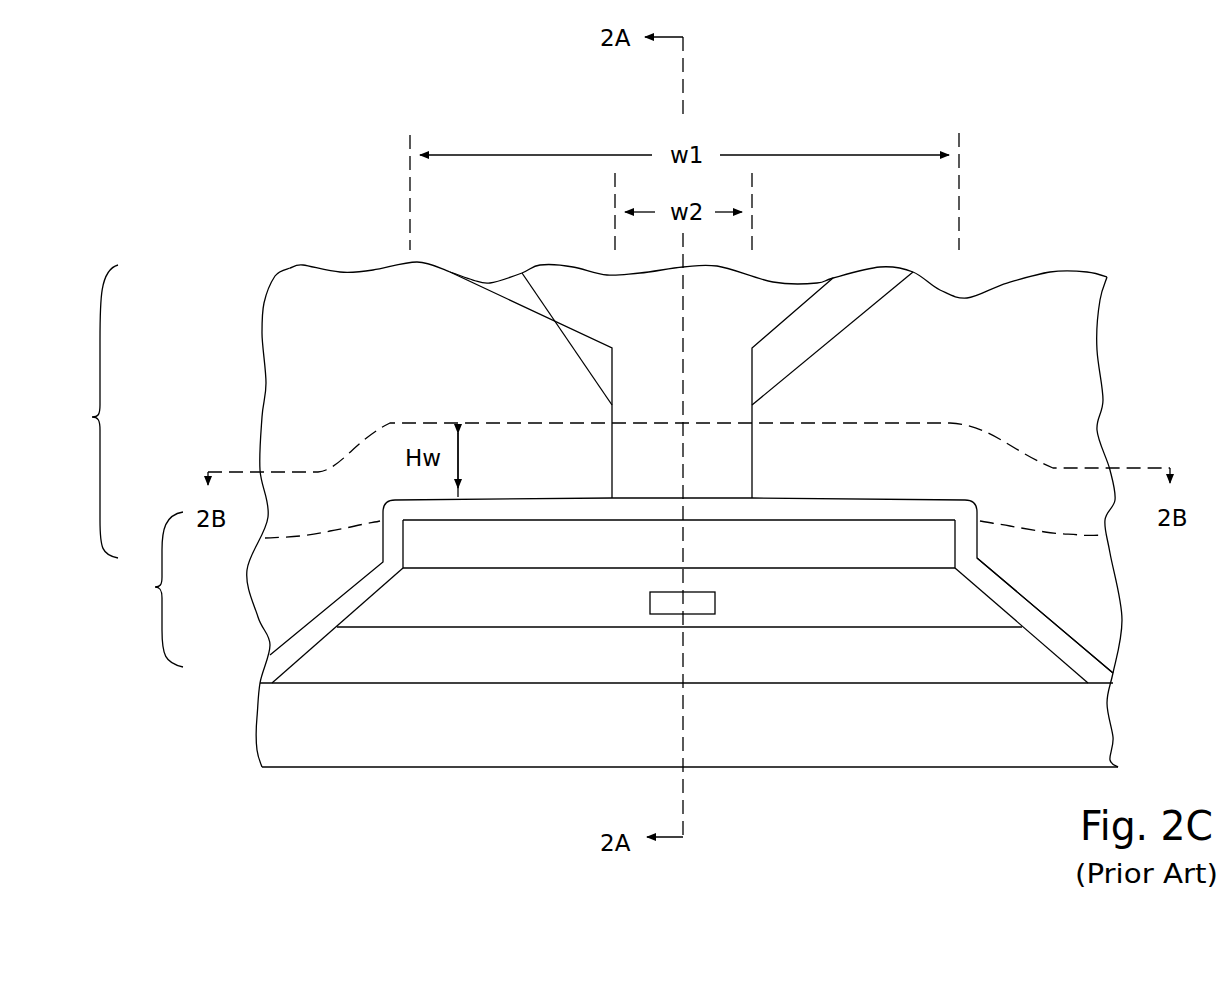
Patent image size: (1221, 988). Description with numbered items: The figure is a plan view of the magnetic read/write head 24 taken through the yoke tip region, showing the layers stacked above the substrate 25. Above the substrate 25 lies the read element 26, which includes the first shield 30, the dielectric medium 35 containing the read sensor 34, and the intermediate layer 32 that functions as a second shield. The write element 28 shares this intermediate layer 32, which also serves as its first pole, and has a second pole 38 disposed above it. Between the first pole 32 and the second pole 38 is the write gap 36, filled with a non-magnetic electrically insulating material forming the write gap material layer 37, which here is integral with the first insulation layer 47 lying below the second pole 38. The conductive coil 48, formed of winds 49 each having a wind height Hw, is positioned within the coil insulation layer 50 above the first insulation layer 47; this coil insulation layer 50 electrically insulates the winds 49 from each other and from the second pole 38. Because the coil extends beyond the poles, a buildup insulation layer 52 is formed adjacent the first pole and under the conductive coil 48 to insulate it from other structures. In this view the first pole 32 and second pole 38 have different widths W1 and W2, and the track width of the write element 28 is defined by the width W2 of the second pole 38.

The magnetic read/write head 24 is at (1010, 166).
The substrate 25 is at (690, 748).
The read element 26 is at (153, 589).
The write element 28 is at (91, 411).
The first shield 30 is at (686, 661).
The intermediate layer 32 is at (679, 544).
The read sensor 34 is at (665, 604).
The dielectric medium 35 is at (680, 625).
The write gap 36 is at (588, 503).
The write gap material layer 37 is at (725, 510).
The second pole 38 is at (681, 385).
The first insulation layer 47 is at (1067, 650).
The conductive coil 48 is at (952, 404).
The winds 49 is at (843, 464).
The coil insulation layer 50 is at (684, 514).
The buildup insulation layer 52 is at (685, 554).